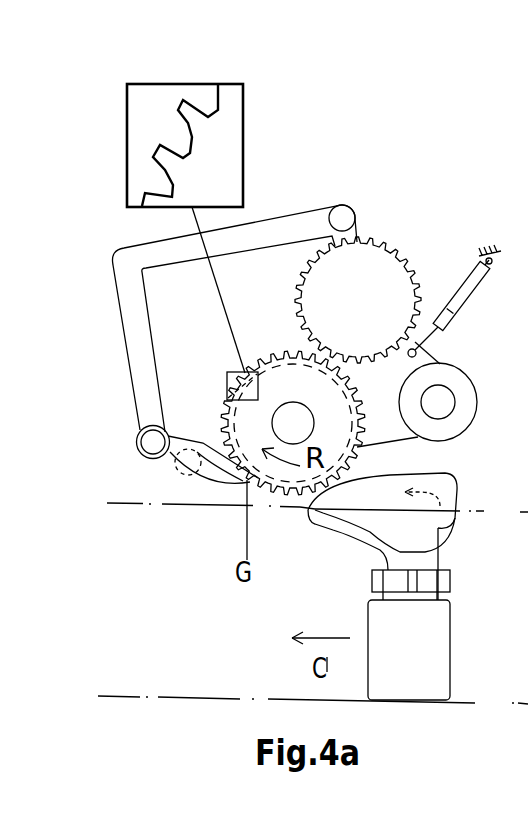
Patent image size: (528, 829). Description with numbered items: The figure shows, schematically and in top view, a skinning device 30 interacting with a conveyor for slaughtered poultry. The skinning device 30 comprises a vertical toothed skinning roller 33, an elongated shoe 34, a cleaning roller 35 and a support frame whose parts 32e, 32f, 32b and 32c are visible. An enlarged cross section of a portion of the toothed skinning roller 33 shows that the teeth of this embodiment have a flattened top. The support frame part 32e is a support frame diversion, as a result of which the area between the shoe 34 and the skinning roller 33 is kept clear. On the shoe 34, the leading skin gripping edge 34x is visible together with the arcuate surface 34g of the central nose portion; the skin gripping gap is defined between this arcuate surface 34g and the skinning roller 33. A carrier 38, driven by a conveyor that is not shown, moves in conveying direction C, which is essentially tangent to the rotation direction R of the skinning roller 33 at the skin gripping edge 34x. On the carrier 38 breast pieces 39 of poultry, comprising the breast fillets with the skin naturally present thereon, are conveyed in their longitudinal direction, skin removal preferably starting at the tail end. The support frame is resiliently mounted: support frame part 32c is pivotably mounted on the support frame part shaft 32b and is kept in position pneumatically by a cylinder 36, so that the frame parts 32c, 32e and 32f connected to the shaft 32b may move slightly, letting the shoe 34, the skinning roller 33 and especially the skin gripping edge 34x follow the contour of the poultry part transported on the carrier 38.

The skinning device 30 is at (440, 188).
The support frame part shaft 32b is at (438, 402).
The support frame part 32c is at (308, 423).
The support frame diversion 32e is at (142, 345).
The support frame part 32f is at (167, 465).
The toothed skinning roller 33 is at (293, 406).
The elongated shoe 34 is at (213, 466).
The arcuate surface of the central nose portion 34g is at (243, 482).
The leading skin gripping edge 34x is at (283, 508).
The cleaning roller 35 is at (358, 300).
The cylinder 36 is at (465, 297).
The carrier 38 is at (409, 635).
The breast pieces 39 is at (382, 536).